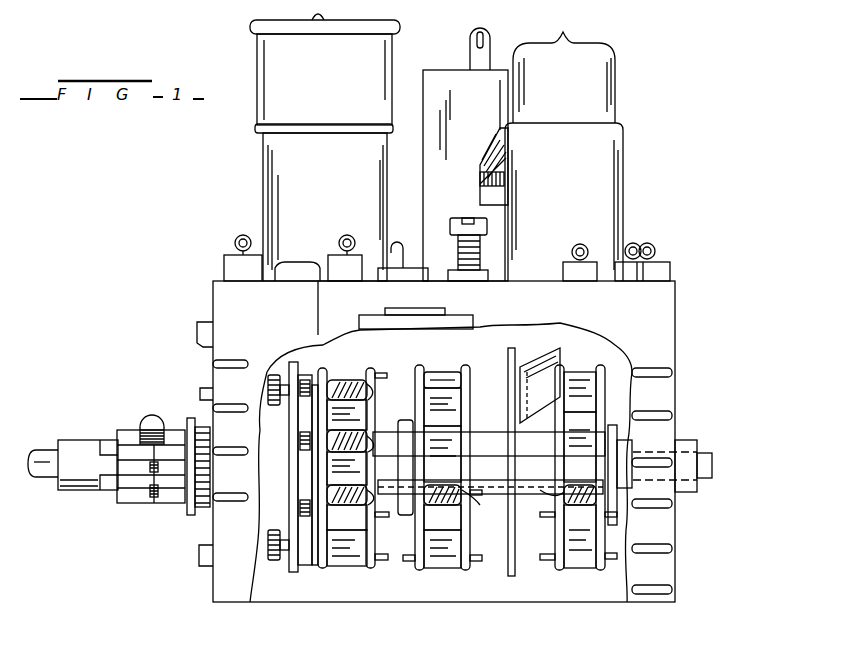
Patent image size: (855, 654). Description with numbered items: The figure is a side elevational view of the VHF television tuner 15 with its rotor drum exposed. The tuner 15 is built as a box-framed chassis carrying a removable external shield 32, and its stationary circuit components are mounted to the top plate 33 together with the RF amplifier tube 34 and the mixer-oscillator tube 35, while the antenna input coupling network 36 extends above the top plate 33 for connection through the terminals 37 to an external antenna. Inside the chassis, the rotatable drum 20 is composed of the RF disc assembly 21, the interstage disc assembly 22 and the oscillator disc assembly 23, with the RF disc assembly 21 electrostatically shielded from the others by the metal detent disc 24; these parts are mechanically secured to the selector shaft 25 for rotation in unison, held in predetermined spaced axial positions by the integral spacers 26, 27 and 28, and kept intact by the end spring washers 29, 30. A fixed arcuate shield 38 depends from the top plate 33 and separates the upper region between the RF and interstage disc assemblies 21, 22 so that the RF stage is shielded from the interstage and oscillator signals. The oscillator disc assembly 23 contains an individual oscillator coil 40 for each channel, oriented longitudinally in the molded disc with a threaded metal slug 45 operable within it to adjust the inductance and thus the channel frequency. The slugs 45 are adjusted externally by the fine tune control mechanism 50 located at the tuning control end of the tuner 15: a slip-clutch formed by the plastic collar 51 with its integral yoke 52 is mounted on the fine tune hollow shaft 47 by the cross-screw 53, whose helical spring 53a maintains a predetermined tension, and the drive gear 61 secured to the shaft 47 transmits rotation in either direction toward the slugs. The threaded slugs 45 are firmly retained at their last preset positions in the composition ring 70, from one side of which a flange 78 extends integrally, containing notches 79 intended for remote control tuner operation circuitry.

The tuner 15 is at (203, 525).
The rotatable drum 20 is at (434, 574).
The RF disc assembly 21 is at (558, 570).
The interstage disc assembly 22 is at (446, 372).
The oscillator disc assembly 23 is at (340, 568).
The metal detent disc 24 is at (513, 578).
The selector shaft 25 is at (38, 480).
The integral spacer 26 is at (530, 500).
The integral spacer 27 is at (492, 510).
The integral spacer 28 is at (388, 431).
The end spring washer 29 is at (626, 452).
The end spring washer 30 is at (290, 470).
The removable external shield 32 is at (600, 337).
The top plate 33 is at (546, 281).
The RF amplifier tube 34 is at (604, 95).
The mixer-oscillator tube 35 is at (260, 183).
The antenna input coupling network 36 is at (442, 70).
The terminal 37 is at (485, 33).
The fixed arcuate shield 38 is at (546, 360).
The oscillator coil 40 is at (354, 384).
The threaded metal slug 45 is at (292, 372).
The fine tune hollow shaft 47 is at (88, 490).
The fine tune control mechanism 50 is at (118, 550).
The collar 51 is at (172, 504).
The yoke 52 is at (133, 504).
The cross-screw 53 is at (153, 416).
The helical spring 53a is at (140, 434).
The drive gear 61 is at (196, 420).
The composition ring 70 is at (303, 575).
The flange 78 is at (292, 574).
The notch 79 is at (301, 398).